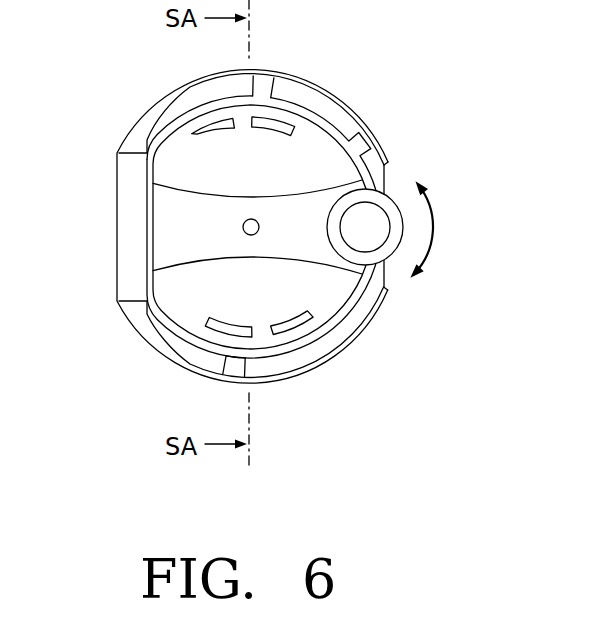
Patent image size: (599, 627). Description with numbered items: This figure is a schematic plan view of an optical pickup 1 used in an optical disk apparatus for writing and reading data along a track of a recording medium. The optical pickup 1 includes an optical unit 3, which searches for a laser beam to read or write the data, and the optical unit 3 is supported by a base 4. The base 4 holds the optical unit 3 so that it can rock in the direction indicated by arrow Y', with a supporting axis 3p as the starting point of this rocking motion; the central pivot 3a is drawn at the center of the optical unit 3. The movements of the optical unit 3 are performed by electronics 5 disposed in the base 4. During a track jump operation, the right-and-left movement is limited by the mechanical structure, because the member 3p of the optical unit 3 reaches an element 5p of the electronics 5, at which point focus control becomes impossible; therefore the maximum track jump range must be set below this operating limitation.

The optical pickup 1 is at (352, 78).
The optical unit 3 is at (390, 198).
The rotation center pin 3a is at (243, 226).
The supporting axis 3p is at (287, 193).
The base 4 is at (368, 318).
The electronics 5 is at (117, 156).
The element of the electronic equipment 5p is at (203, 131).
The rocking direction Y' is at (451, 229).